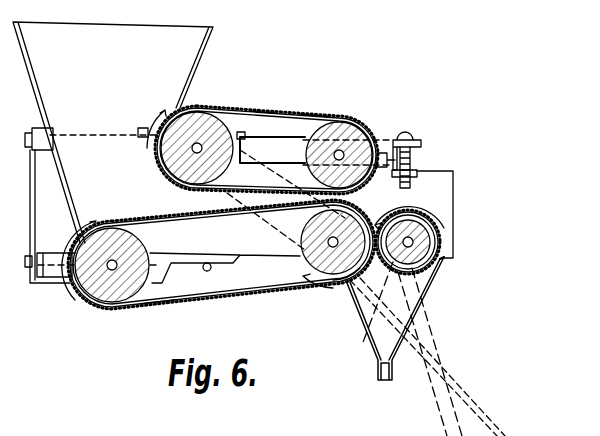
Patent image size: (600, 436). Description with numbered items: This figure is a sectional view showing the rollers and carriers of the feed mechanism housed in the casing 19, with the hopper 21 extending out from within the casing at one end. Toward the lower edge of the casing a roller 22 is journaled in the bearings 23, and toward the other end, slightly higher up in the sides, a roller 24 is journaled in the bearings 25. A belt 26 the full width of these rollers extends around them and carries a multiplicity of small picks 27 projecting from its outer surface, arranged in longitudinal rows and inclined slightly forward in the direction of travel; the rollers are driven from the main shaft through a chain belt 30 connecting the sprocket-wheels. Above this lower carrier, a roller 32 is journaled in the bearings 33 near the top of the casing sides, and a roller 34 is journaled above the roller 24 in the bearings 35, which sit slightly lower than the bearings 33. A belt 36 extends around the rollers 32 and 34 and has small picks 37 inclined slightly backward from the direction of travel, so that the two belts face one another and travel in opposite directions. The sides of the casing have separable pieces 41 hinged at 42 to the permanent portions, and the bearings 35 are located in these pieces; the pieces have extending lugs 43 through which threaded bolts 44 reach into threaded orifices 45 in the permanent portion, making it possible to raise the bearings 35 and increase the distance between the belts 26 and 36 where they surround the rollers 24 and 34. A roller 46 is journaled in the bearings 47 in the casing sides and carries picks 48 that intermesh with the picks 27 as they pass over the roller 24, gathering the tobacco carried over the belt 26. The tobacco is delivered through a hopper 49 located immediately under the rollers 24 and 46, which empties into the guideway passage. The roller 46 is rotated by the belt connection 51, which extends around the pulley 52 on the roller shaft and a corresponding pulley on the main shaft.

The casing 19 is at (239, 205).
The hopper 21 is at (113, 132).
The roller 22 is at (100, 293).
The bearings 23 is at (107, 268).
The roller 24 is at (334, 285).
The bearings 25 is at (329, 251).
The belt 26 is at (260, 292).
The picks 27 is at (158, 303).
The chain belt 30 is at (497, 427).
The roller 32 is at (220, 114).
The bearings 33 is at (201, 132).
The roller 34 is at (333, 127).
The bearings 35 is at (341, 153).
The belt 36 is at (303, 112).
The picks 37 is at (256, 110).
The separable pieces 41 is at (317, 152).
The hinge 42 is at (244, 134).
The lugs 43 is at (419, 143).
The threaded bolts 44 is at (409, 131).
The threaded orifices 45 is at (419, 172).
The roller 46 is at (420, 242).
The bearings 47 is at (416, 249).
The picks 48 is at (437, 229).
The hopper 49 is at (381, 331).
The belt connection 51 is at (440, 318).
The pulley 52 is at (432, 281).